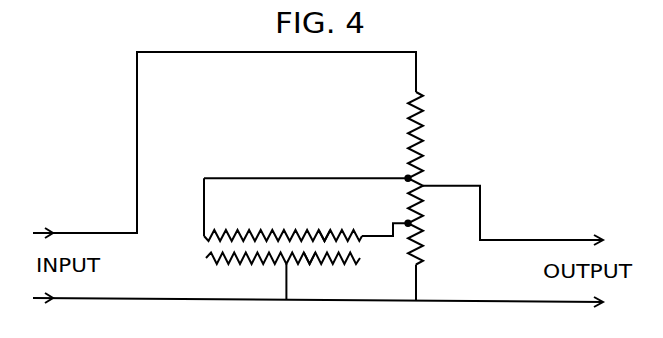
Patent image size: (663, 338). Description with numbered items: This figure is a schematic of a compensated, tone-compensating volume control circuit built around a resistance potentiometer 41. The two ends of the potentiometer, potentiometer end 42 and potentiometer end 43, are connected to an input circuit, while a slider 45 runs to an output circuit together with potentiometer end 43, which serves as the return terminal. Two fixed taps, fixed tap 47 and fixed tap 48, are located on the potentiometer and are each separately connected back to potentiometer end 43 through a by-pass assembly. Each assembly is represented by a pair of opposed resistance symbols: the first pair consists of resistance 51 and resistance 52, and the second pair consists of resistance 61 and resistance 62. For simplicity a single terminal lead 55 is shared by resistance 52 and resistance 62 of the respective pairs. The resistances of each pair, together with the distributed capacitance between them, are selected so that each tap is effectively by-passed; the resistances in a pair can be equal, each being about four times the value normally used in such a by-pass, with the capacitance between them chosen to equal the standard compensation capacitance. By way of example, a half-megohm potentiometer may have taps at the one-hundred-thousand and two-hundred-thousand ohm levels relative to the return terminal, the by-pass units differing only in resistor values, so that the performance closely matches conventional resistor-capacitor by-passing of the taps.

The resistance potentiometer 41 is at (428, 123).
The potentiometer end 42 is at (412, 74).
The potentiometer end 43 is at (413, 267).
The slider 45 is at (455, 185).
The fixed tap 47 is at (403, 177).
The fixed tap 48 is at (405, 222).
The resistance 51 is at (225, 230).
The resistance 52 is at (243, 264).
The terminal lead 55 is at (286, 288).
The resistance 61 is at (323, 230).
The resistance 62 is at (307, 263).